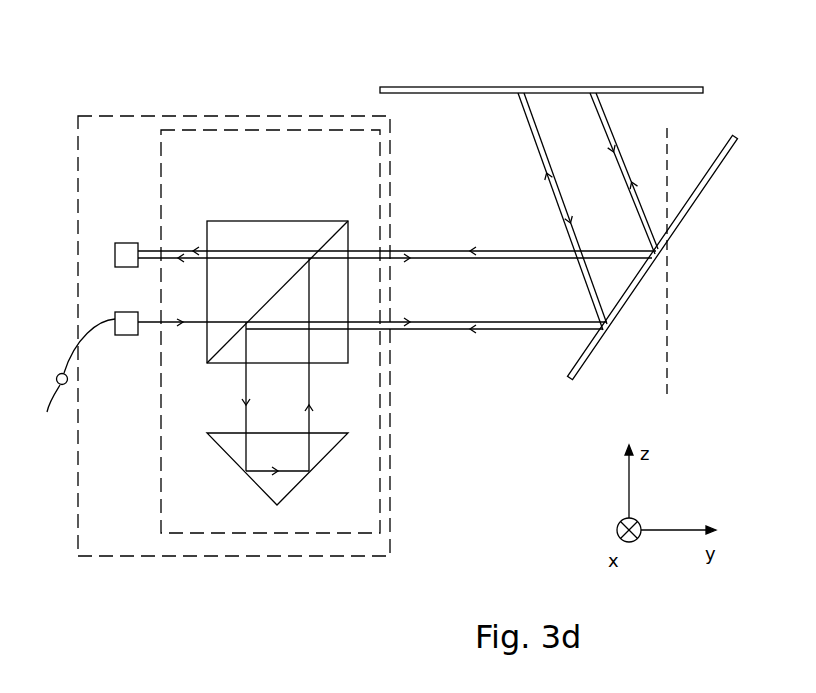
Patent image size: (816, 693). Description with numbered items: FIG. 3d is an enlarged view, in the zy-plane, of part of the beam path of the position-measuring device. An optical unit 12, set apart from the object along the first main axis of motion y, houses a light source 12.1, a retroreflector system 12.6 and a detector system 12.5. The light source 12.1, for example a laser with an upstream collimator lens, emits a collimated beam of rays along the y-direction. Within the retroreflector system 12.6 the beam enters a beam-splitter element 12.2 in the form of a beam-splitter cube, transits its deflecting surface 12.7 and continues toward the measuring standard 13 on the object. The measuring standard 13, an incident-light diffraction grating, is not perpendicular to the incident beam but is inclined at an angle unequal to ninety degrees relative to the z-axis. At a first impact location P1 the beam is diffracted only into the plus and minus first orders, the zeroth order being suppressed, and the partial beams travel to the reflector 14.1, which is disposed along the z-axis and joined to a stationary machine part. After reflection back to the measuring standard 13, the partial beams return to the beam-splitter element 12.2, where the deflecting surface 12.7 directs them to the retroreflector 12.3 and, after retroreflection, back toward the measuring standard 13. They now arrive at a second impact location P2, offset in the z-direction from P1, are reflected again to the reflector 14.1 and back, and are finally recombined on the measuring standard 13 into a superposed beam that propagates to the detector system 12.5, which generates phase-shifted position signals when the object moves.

The optical unit 12 is at (110, 546).
The light source 12.1 is at (127, 337).
The beam-splitter element 12.2 is at (222, 232).
The retroreflector 12.3 is at (288, 484).
The detector system 12.5 is at (122, 243).
The retroreflector system 12.6 is at (198, 533).
The deflecting surface 12.7 is at (327, 230).
The measuring standard 13 is at (713, 172).
The reflector 14.1 is at (670, 88).
The first impact location P1 is at (604, 330).
The second impact location P2 is at (660, 257).